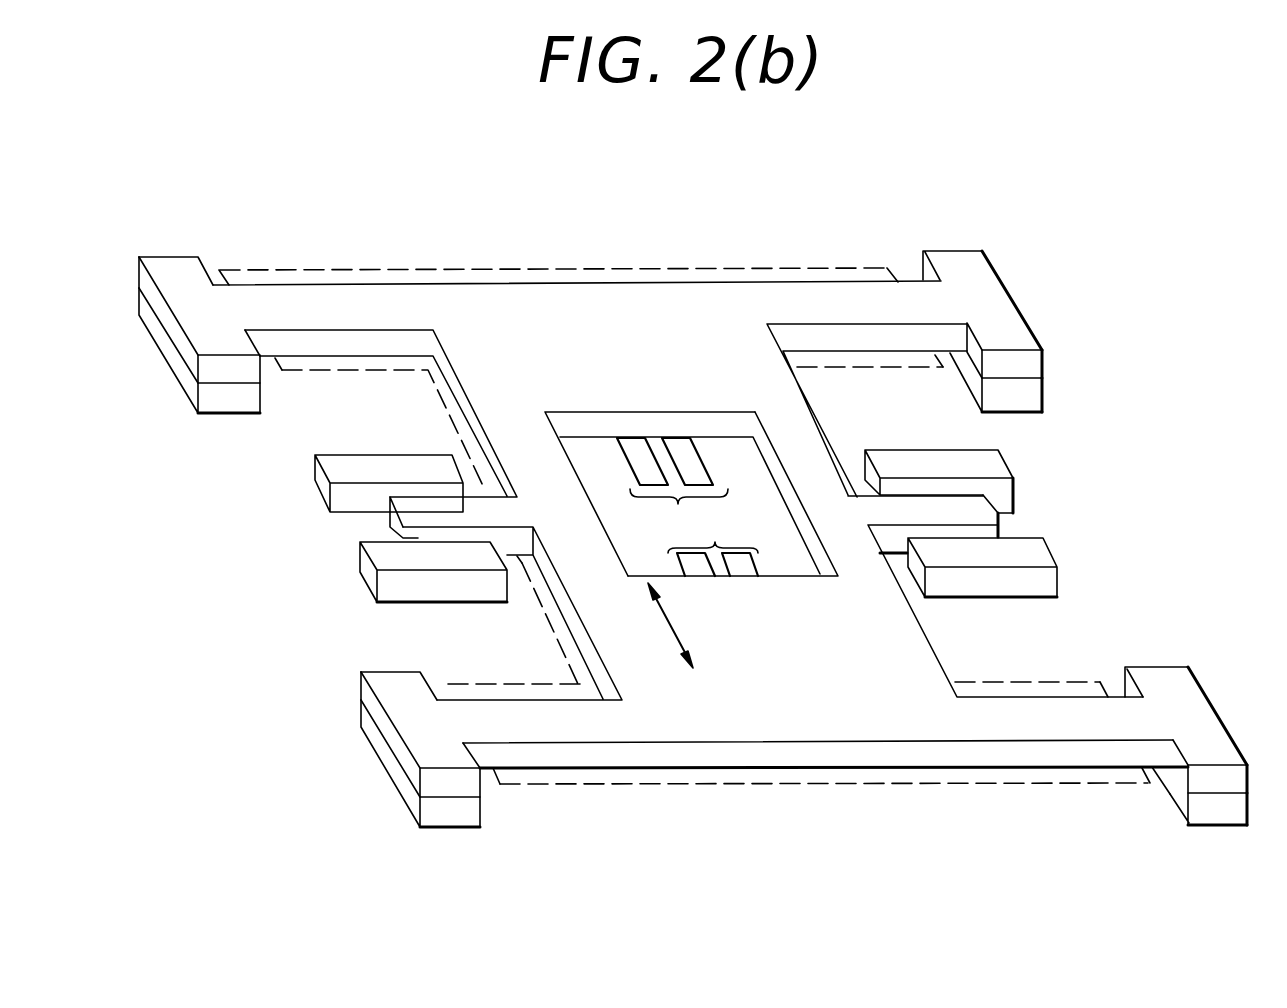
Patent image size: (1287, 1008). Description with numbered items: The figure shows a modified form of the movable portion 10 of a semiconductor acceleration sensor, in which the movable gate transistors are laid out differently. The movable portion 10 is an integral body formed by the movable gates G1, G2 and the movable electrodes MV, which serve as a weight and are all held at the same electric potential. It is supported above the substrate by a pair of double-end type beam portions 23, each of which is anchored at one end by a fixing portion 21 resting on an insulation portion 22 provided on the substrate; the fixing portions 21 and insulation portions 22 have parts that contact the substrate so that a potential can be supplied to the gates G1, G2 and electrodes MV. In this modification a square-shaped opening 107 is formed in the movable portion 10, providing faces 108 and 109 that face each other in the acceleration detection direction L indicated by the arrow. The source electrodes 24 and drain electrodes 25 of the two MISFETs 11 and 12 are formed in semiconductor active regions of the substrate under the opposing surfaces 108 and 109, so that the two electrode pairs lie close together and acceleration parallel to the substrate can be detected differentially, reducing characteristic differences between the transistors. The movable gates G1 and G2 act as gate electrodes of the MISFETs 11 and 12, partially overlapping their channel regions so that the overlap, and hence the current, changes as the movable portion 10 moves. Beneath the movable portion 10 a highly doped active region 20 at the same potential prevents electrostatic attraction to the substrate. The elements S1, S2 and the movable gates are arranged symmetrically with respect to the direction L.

The movable portion 10 is at (675, 318).
The active region 20 is at (622, 775).
The fixing portion 21 is at (179, 262).
The insulation portion 22 is at (225, 400).
The beam portion 23 is at (303, 297).
The source electrode 24 is at (642, 466).
The drain electrode 25 is at (692, 457).
The MISFET 11 is at (679, 511).
The MISFET 12 is at (713, 532).
The square-shaped opening 107 is at (588, 412).
The face 108 is at (808, 574).
The face 109 is at (700, 430).
The movable gate G1 is at (647, 412).
The movable gate G2 is at (733, 580).
The first spacer S1 is at (330, 465).
The second spacer S2 is at (377, 555).
The movable electrode MV is at (405, 510).
The acceleration detection direction L is at (673, 628).